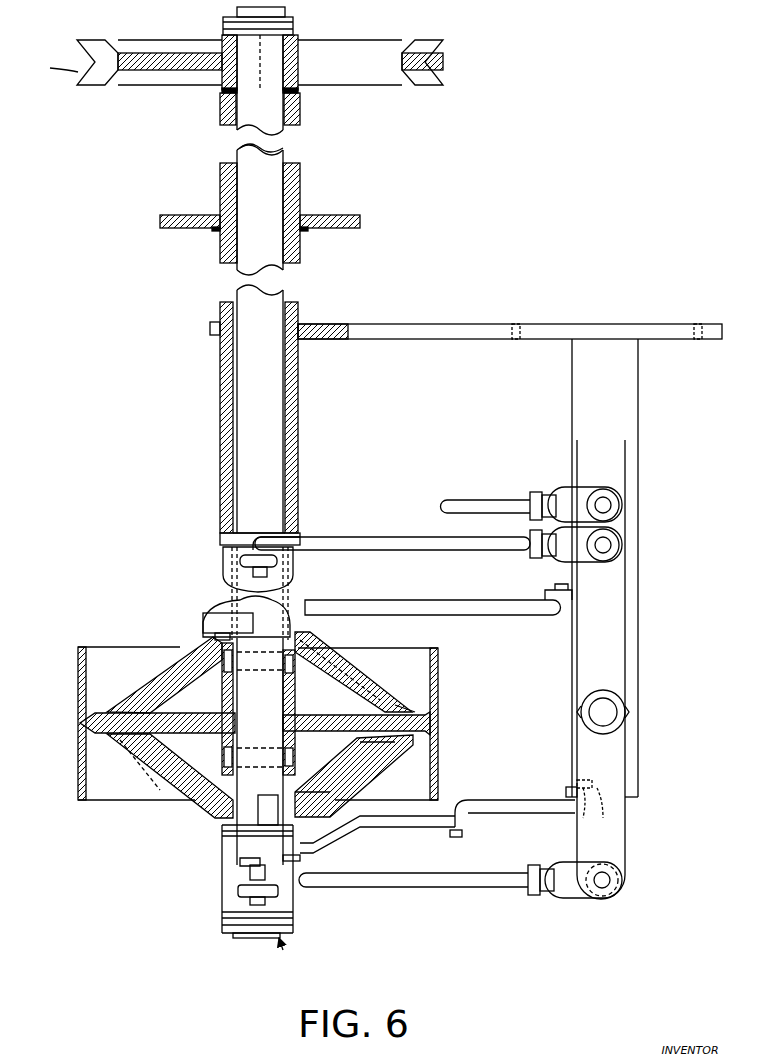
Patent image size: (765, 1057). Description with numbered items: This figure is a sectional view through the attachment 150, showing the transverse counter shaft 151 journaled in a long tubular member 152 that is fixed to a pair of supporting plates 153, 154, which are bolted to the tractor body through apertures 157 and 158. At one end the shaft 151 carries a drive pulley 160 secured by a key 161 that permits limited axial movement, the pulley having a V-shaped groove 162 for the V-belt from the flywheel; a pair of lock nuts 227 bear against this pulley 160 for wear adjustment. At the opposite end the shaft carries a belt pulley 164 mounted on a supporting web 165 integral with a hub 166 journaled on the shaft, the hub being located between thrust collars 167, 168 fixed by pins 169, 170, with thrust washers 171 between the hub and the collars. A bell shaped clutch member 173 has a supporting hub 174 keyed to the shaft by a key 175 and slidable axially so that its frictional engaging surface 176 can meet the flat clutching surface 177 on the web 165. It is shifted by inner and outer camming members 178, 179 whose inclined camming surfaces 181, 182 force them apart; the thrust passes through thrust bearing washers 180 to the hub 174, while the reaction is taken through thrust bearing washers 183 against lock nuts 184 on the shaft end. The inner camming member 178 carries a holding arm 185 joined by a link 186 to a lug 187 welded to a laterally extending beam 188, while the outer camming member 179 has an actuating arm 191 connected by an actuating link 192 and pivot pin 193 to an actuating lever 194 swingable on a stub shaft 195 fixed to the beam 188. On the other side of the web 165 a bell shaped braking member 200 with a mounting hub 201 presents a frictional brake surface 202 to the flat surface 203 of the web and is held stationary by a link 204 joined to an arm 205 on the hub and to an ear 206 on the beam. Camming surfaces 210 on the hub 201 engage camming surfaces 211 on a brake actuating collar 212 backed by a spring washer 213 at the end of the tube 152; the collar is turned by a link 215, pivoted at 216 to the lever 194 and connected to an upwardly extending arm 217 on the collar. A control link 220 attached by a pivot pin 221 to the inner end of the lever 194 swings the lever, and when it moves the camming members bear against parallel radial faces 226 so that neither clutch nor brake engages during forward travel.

The attachment 150 is at (150, 534).
The counter shaft 151 is at (270, 418).
The tubular member 152 is at (225, 382).
The supporting plate 153 is at (352, 220).
The supporting plate 154 is at (425, 330).
The apertures 157 is at (185, 228).
The apertures 158 is at (513, 342).
The pulley 160 is at (152, 70).
The key 161 is at (290, 50).
The V-shaped groove 162 is at (48, 66).
The belt pulley 164 is at (438, 690).
The supporting disk or web 165 is at (305, 714).
The hub 166 is at (222, 700).
The thrust collar 167 is at (308, 640).
The thrust collar 168 is at (305, 806).
The pin 169 is at (340, 655).
The pin 170 is at (354, 776).
The thrust washers 171 is at (292, 682).
The clutch member 173 is at (158, 750).
The supporting hub 174 is at (222, 820).
The key 175 is at (274, 810).
The frictional engaging surface 176 is at (82, 724).
The clutching surface 177 is at (122, 741).
The inner camming member 178 is at (300, 858).
The outer camming member 179 is at (285, 902).
The thrust bearing washers 180 is at (250, 822).
The camming surface 181 is at (240, 865).
The camming surface 182 is at (235, 850).
The thrust bearing washers 183 is at (226, 921).
The lock nuts 184 is at (282, 953).
The holding arm 185 is at (393, 829).
The link 186 is at (510, 815).
The lug 187 is at (595, 806).
The beam 188 is at (638, 769).
The actuating arm 191 is at (238, 892).
The actuating link 192 is at (424, 889).
The pivot pin 193 is at (602, 889).
The actuating lever 194 is at (618, 748).
The stub shaft 195 is at (608, 705).
The braking member 200 is at (170, 674).
The mounting hub 201 is at (265, 606).
The frictional brake surface 202 is at (380, 743).
The flat surface 203 is at (395, 705).
The link 204 is at (425, 602).
The arm 205 is at (205, 622).
The ear 206 is at (545, 594).
The camming surfaces 210 is at (290, 580).
The camming surfaces 211 is at (231, 584).
The brake actuating collar 212 is at (280, 560).
The spring washer 213 is at (222, 541).
The link 215 is at (392, 539).
The pivotal connection 216 is at (605, 547).
The arm 217 is at (292, 546).
The control link 220 is at (470, 502).
The pivot pin 221 is at (605, 505).
The faces 226 is at (262, 866).
The lock nuts 227 is at (237, 22).